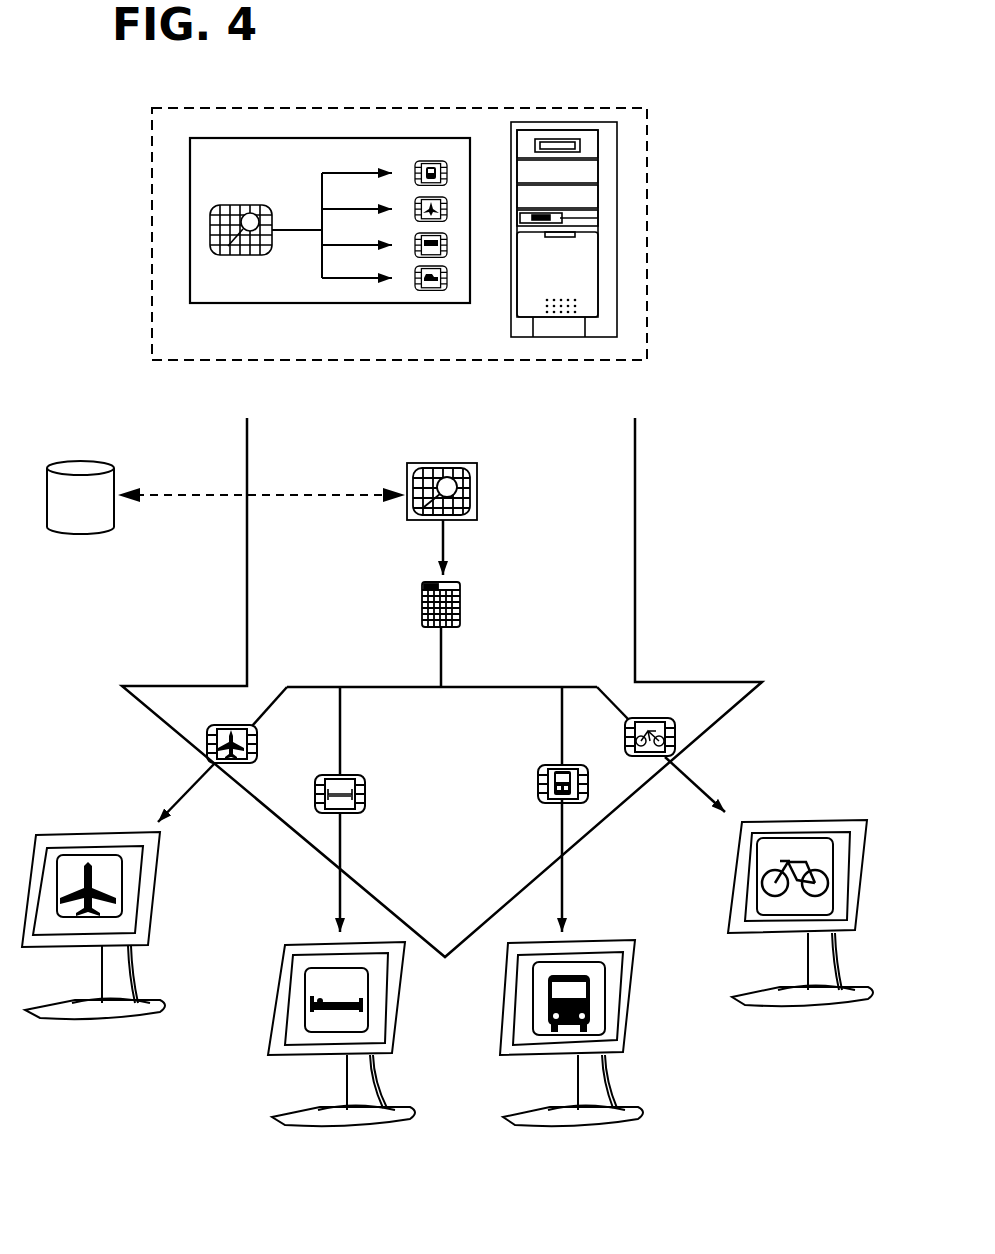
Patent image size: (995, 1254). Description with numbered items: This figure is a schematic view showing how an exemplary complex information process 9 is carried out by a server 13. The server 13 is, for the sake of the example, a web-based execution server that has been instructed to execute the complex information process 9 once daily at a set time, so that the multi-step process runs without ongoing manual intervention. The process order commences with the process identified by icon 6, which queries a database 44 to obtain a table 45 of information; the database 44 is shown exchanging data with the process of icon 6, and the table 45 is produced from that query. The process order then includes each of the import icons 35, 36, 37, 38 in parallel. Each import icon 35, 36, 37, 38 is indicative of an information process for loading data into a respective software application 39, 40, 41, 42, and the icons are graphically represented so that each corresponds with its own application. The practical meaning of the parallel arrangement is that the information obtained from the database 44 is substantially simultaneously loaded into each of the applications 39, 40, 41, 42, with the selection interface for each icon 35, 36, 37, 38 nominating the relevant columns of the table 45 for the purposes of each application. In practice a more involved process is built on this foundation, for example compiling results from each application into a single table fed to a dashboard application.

The complex information process 9 is at (393, 148).
The server 13 is at (693, 213).
The database 44 is at (78, 464).
The icon 6 is at (477, 472).
The table 45 is at (460, 600).
The import icon 36 is at (221, 723).
The import icon 37 is at (366, 800).
The import icon 35 is at (540, 770).
The import icon 38 is at (657, 716).
The software application 40 is at (95, 832).
The software application 41 is at (362, 1125).
The software application 39 is at (594, 1120).
The software application 42 is at (800, 820).